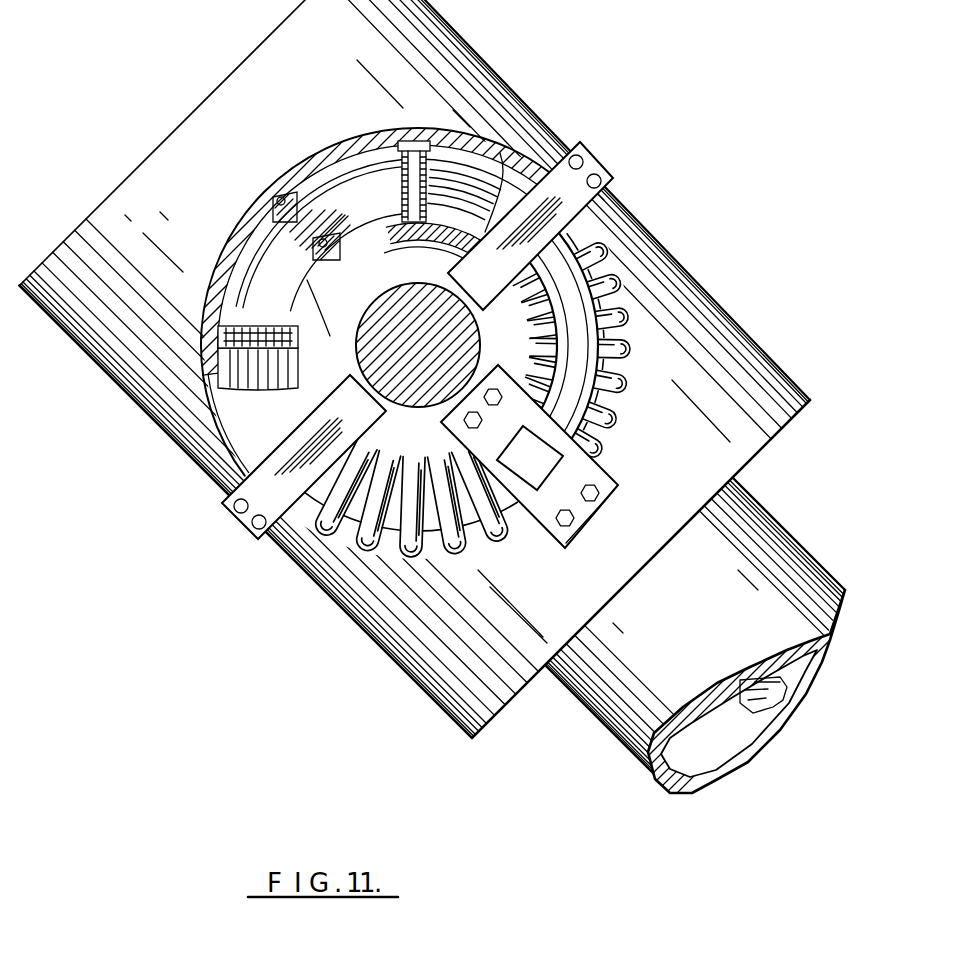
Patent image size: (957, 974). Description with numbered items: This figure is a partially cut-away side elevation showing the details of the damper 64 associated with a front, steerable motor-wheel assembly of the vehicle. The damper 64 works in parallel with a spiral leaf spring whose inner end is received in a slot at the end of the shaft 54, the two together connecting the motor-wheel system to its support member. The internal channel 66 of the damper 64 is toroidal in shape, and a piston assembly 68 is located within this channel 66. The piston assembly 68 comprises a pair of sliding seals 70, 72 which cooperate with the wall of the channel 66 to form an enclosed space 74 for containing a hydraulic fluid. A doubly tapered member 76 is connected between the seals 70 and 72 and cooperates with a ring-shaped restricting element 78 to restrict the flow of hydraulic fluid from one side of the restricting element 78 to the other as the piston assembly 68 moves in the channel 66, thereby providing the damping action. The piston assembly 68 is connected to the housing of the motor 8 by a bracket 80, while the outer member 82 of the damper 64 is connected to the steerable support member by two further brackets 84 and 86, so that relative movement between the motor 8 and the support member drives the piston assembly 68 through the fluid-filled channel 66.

The motor 8 is at (710, 350).
The shaft 54 is at (400, 300).
The damper 64 is at (301, 284).
The internal channel 66 is at (494, 165).
The piston assembly 68 is at (570, 267).
The sliding seal 70 is at (202, 323).
The sliding seal 72 is at (420, 140).
The enclosed space 74 is at (312, 183).
The doubly tapered member 76 is at (263, 273).
The ring-shaped restricting element 78 is at (277, 220).
The bracket 80 is at (590, 472).
The outer member 82 is at (362, 140).
The bracket 84 is at (596, 168).
The bracket 86 is at (238, 535).